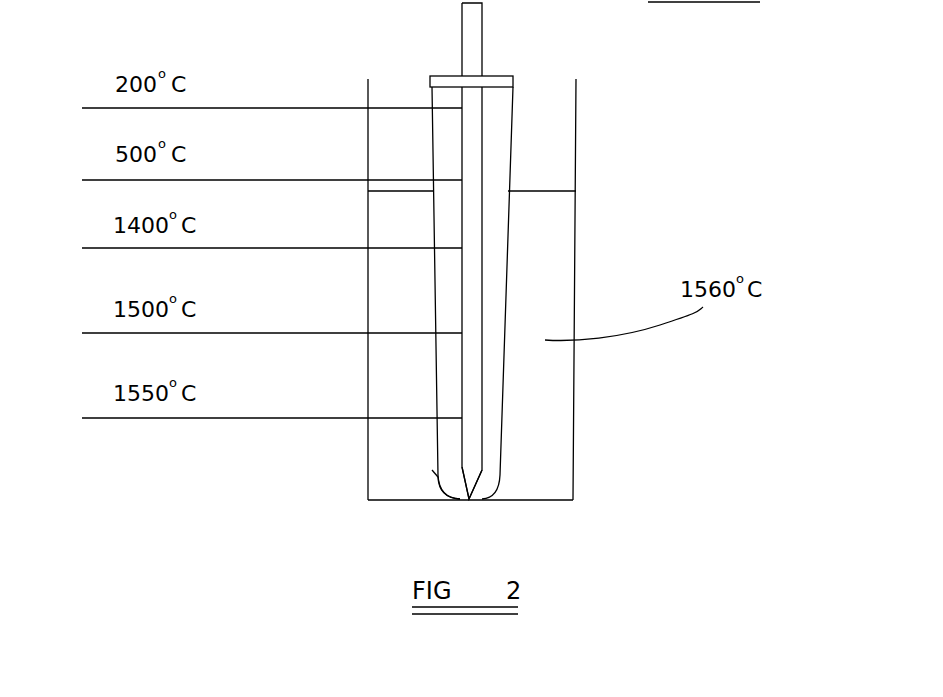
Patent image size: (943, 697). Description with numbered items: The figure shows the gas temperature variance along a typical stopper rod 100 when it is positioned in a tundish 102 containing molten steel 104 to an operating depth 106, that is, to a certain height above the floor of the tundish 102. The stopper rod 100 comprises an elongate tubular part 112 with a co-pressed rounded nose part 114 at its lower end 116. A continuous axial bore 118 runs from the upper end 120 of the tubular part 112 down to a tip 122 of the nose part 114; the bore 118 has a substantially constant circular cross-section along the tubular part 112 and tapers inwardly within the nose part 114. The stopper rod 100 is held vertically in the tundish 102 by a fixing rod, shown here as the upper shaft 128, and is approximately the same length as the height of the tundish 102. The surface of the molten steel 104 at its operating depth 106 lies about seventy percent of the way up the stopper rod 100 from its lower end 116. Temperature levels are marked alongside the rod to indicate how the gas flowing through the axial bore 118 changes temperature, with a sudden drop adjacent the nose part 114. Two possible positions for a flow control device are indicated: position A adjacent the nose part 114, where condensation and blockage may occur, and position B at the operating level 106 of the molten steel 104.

The stopper rod 100 is at (500, 103).
The tundish 102 is at (577, 117).
The molten steel 104 is at (547, 422).
The operating depth 106 is at (580, 193).
The elongate tubular part 112 is at (445, 142).
The rounded nose part 114 is at (455, 499).
The lower end 116 is at (428, 489).
The axial bore 118 is at (468, 300).
The upper end 120 is at (420, 82).
The tip 122 is at (478, 508).
The rod 128 is at (473, 28).
The position A is at (469, 470).
The position B is at (465, 203).